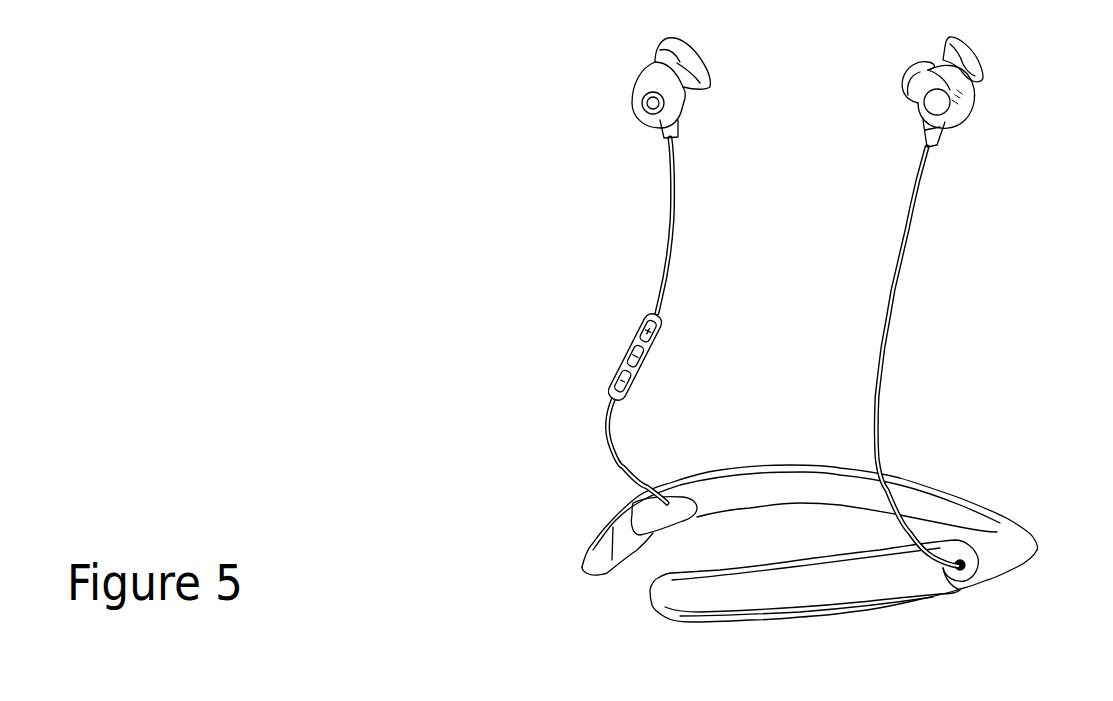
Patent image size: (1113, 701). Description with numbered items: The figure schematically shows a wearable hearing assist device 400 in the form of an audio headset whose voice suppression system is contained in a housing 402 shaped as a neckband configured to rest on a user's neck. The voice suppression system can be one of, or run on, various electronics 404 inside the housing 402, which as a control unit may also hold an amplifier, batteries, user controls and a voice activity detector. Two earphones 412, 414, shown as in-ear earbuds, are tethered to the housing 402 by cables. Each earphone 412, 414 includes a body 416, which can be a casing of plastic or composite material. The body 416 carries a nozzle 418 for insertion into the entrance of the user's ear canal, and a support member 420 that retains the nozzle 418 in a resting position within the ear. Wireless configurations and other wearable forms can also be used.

The wearable hearing assist device 400 is at (441, 361).
The housing 402 is at (601, 636).
The electronics 404 is at (645, 507).
The earphone 412 is at (652, 127).
The earphone 414 is at (918, 118).
The body 416 is at (975, 110).
The nozzle 418 is at (903, 90).
The support member 420 is at (982, 63).